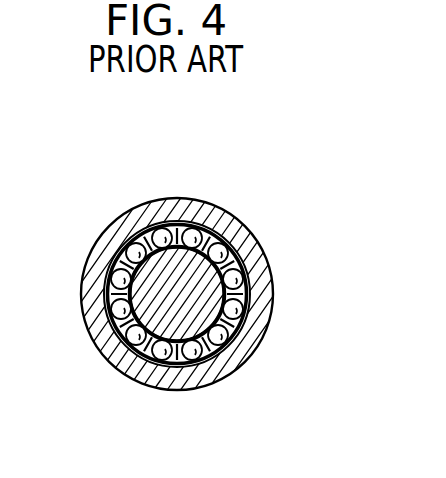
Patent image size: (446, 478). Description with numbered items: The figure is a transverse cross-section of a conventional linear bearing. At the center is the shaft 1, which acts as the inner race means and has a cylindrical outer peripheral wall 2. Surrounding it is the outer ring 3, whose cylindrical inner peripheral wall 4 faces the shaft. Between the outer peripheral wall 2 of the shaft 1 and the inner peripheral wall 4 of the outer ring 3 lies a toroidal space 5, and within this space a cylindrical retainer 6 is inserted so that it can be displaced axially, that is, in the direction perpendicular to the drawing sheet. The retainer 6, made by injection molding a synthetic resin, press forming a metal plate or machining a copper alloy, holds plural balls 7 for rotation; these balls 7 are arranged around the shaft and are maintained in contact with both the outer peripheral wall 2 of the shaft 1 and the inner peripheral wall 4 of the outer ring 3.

The shaft 1 is at (142, 370).
The outer peripheral wall 2 is at (177, 365).
The outer ring 3 is at (196, 190).
The inner peripheral wall 4 is at (140, 230).
The toroidal space 5 is at (217, 367).
The cylindrical retainer 6 is at (240, 258).
The balls 7 is at (222, 246).